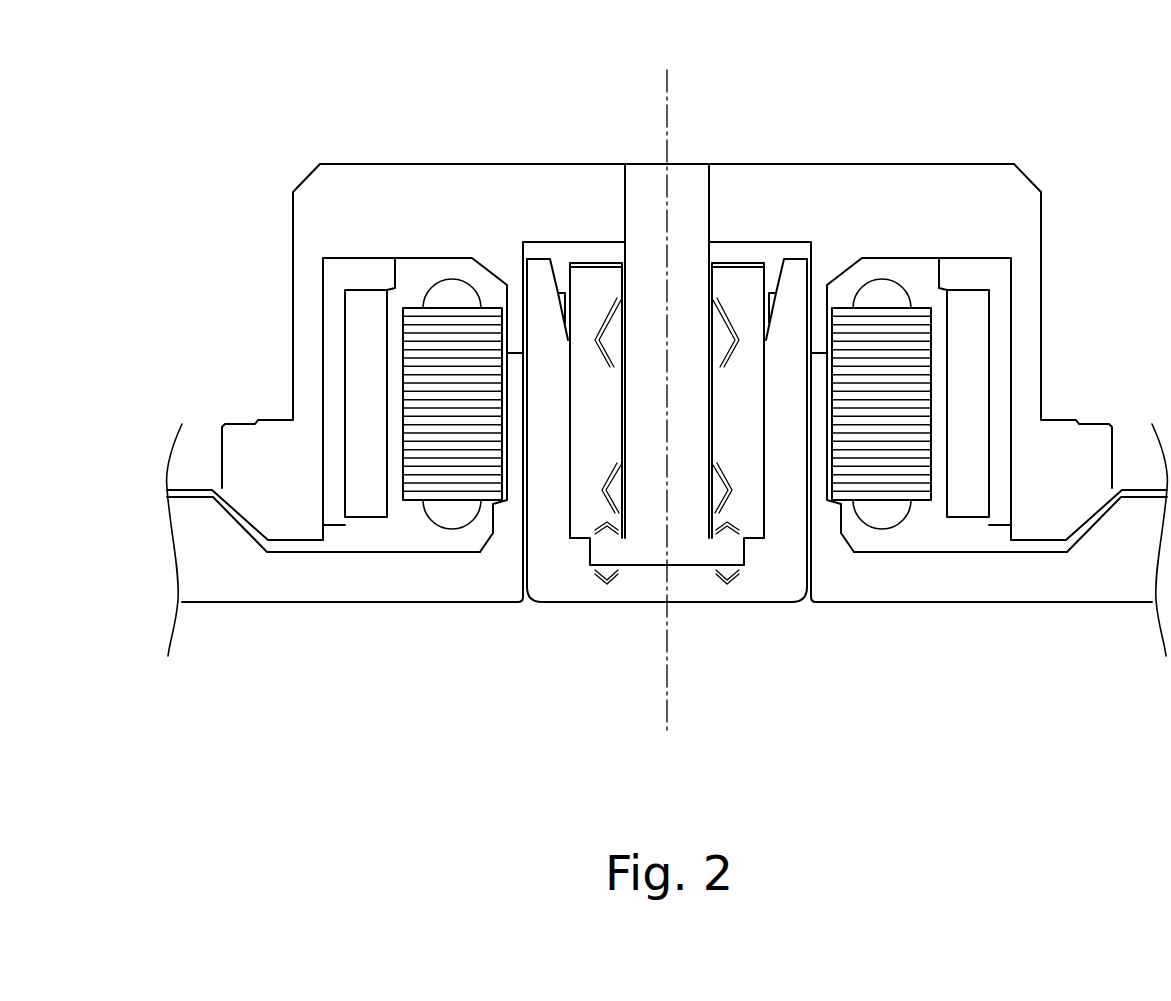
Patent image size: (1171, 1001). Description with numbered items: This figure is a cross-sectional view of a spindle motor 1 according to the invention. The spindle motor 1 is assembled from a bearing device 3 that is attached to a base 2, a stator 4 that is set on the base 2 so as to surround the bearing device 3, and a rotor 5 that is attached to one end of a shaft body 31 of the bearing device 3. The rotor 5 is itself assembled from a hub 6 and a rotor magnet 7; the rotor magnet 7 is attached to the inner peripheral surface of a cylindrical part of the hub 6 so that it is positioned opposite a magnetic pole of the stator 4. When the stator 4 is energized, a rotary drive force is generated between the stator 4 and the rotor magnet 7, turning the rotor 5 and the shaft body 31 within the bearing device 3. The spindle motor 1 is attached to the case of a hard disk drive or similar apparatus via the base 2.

The spindle motor 1 is at (958, 108).
The base 2 is at (1020, 567).
The bearing device 3 is at (802, 622).
The shaft body 31 is at (687, 183).
The stator 4 is at (447, 477).
The rotor 5 is at (492, 138).
The hub 6 is at (327, 183).
The rotor magnet 7 is at (362, 345).